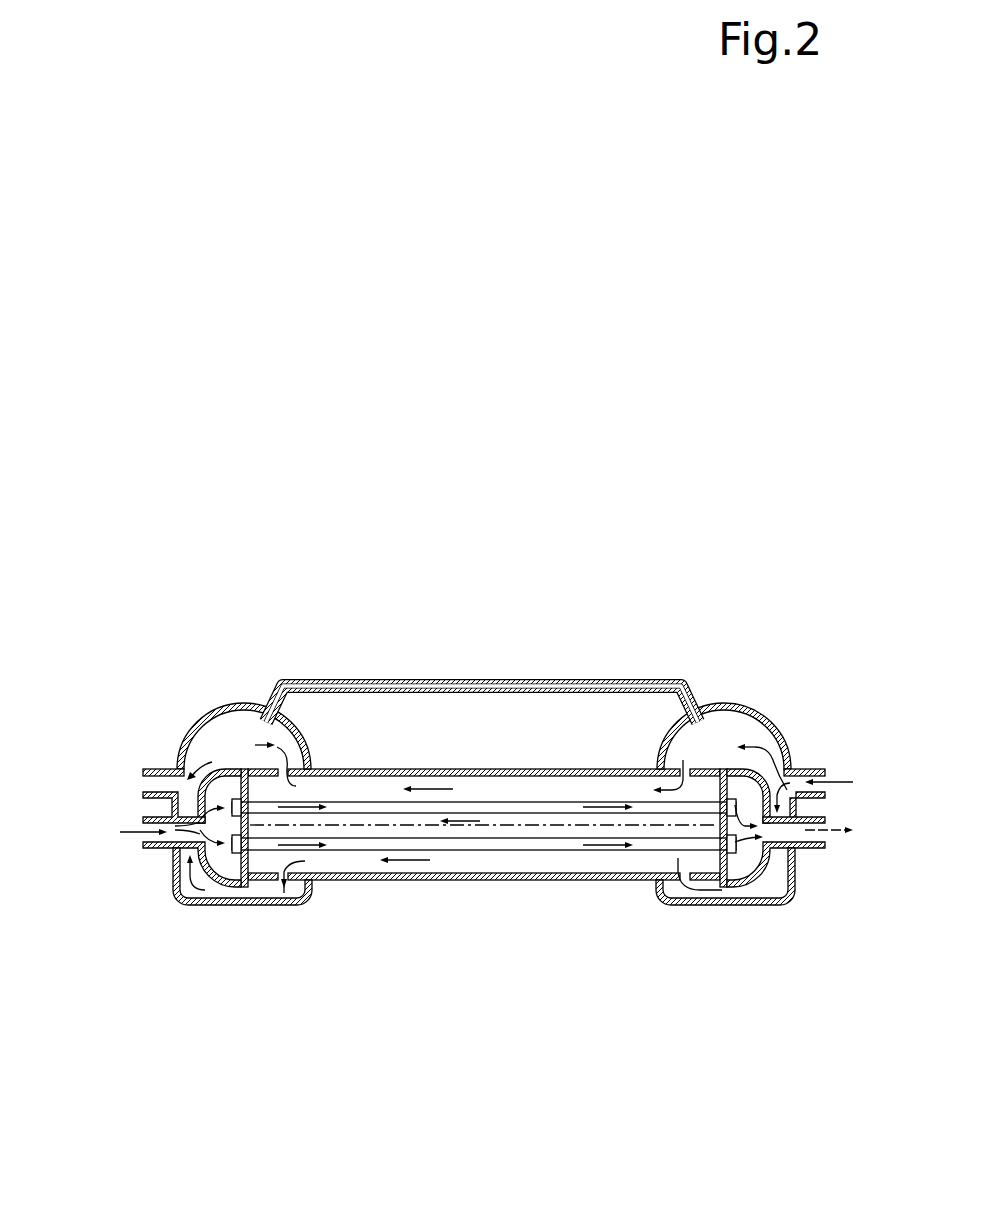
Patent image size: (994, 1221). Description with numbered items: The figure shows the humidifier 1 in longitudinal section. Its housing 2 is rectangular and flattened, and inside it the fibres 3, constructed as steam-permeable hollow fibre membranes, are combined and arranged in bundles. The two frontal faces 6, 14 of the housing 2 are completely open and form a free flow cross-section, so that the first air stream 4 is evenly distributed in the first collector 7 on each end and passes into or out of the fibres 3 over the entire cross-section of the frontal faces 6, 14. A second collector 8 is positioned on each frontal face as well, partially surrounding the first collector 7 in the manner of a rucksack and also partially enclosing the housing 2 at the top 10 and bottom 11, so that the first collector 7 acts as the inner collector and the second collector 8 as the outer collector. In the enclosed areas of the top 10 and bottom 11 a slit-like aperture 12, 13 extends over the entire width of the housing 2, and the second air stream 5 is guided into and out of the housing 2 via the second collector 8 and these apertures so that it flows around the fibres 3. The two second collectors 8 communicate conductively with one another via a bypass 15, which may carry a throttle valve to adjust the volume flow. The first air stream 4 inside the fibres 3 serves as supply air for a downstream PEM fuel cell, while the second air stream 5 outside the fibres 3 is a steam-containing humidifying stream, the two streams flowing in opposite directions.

The humidifier 1 is at (674, 602).
The housing 2 is at (573, 882).
The fibres 3 is at (483, 842).
The first air stream 4 is at (175, 849).
The second air stream 5 is at (237, 735).
The frontal face 6 is at (188, 889).
The first collector 7 is at (243, 858).
The second collector 8 is at (200, 733).
The top 10 is at (355, 773).
The bottom 11 is at (388, 882).
The slit-like aperture 12 is at (283, 768).
The slit-like aperture 13 is at (283, 893).
The frontal face 14 is at (727, 862).
The bypass 15 is at (462, 683).